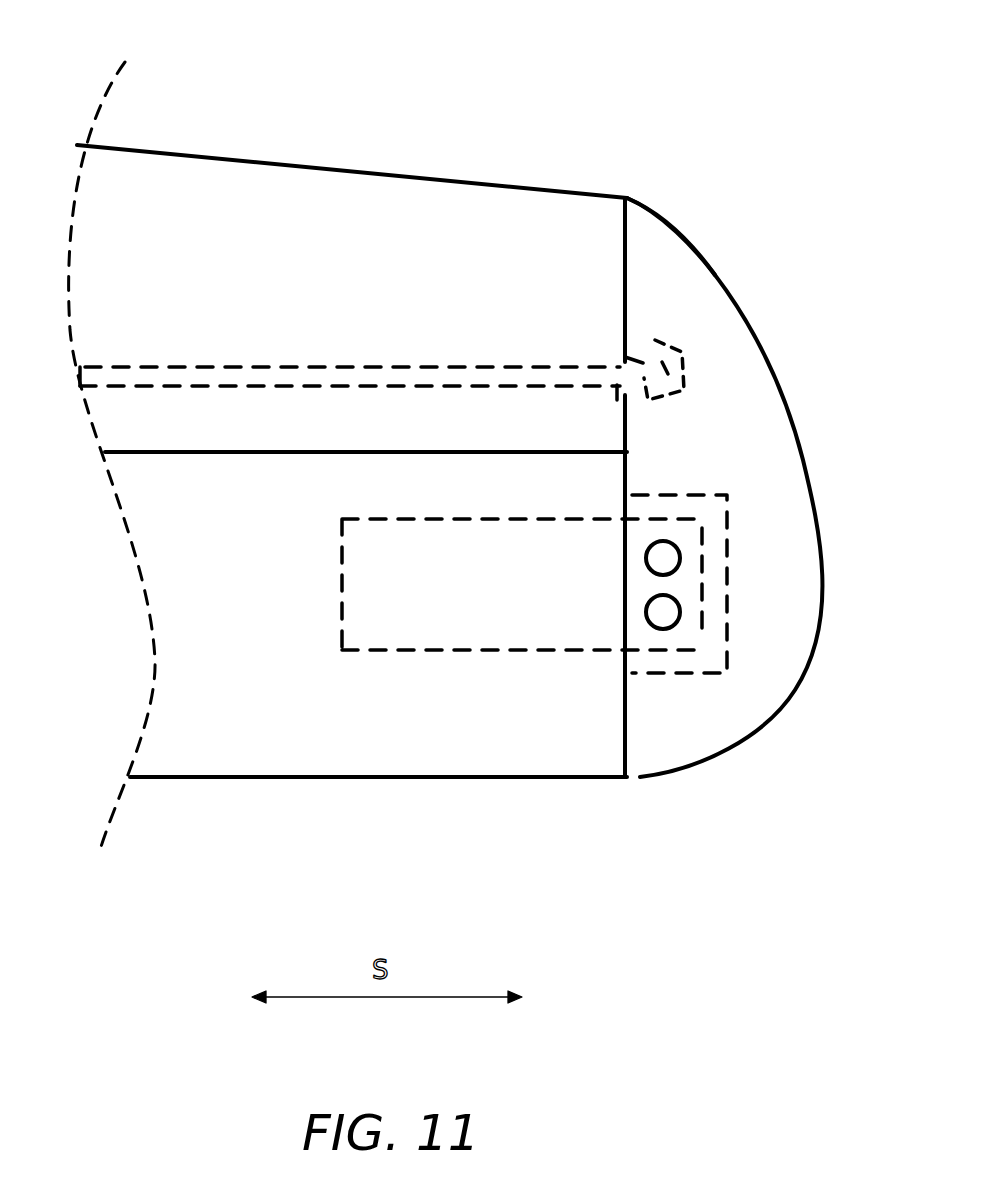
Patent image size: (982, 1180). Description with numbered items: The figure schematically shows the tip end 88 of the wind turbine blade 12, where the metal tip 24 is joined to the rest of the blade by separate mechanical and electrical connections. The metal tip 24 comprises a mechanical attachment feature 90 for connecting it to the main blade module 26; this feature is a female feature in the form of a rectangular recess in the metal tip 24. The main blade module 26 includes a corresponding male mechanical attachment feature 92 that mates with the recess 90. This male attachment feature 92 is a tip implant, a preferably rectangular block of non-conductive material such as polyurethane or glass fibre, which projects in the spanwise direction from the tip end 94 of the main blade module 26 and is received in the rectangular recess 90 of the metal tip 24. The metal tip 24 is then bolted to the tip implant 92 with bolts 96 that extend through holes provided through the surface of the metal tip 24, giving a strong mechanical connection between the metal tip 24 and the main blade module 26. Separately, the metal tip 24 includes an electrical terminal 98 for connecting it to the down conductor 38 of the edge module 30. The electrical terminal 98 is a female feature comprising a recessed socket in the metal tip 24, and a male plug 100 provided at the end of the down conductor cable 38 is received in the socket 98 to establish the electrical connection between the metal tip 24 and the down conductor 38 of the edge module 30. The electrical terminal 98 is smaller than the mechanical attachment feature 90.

The wind turbine blade 12 is at (258, 96).
The edge module 30 is at (400, 197).
The main blade module 26 is at (258, 760).
The metal tip 24 is at (745, 352).
The tip end 88 is at (686, 224).
The tip end of the main blade module 94 is at (614, 784).
The down conductor 38 is at (292, 376).
The plug 100 is at (642, 372).
The electrical terminal 98 is at (663, 346).
The mechanical attachment feature 90 is at (684, 675).
The male mechanical attachment feature 92 is at (675, 520).
The bolts 96 is at (666, 559).